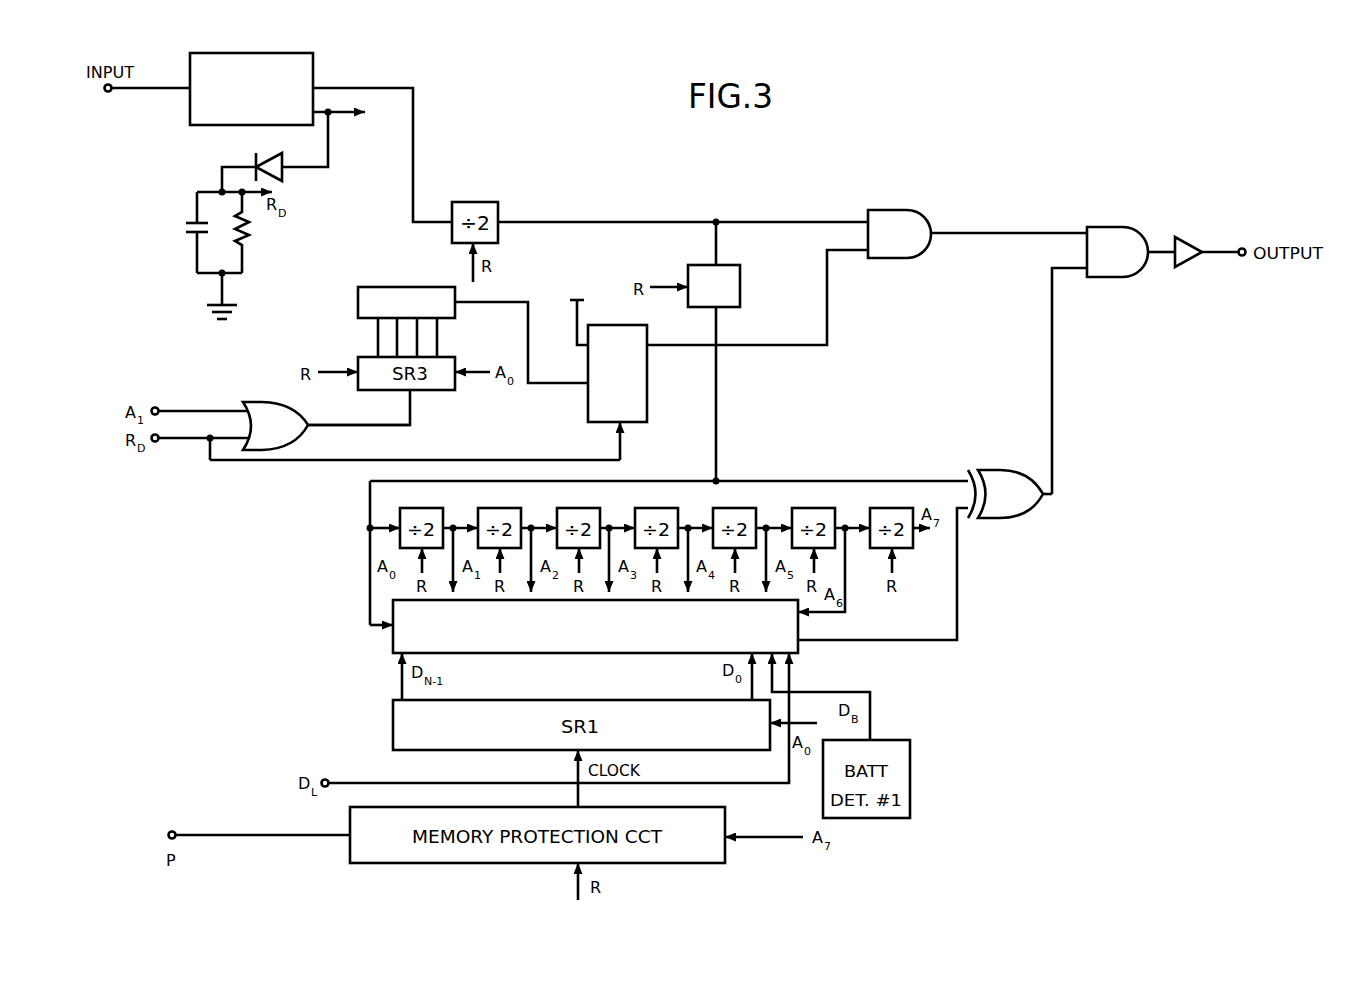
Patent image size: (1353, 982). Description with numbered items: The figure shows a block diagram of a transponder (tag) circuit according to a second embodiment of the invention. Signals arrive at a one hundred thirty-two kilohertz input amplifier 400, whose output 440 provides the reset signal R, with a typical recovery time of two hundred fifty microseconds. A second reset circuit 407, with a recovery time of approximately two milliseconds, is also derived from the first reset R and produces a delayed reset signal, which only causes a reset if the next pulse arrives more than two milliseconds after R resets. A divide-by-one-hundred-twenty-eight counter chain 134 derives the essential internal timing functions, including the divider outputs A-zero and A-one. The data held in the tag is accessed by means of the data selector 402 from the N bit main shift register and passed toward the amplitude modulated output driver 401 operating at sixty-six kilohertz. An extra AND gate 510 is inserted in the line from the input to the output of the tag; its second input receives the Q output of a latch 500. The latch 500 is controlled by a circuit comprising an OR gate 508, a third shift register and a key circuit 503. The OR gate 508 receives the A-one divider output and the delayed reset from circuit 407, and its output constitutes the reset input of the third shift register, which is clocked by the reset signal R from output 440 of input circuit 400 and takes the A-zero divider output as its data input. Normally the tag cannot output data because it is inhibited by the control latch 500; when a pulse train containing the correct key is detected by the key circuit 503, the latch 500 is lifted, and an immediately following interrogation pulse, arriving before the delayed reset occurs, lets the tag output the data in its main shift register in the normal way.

The input amplifier 400 is at (313, 68).
The output of the input circuitry 440 is at (315, 108).
The second reset circuit 407 is at (187, 218).
The key circuit 503 is at (358, 296).
The OR gate 508 is at (262, 403).
The latch 500 is at (649, 365).
The divide-by-128 counter chain 134 is at (735, 270).
The AND gate 510 is at (905, 252).
The amplitude modulated output driver 401 is at (1185, 245).
The data selector 402 is at (395, 638).